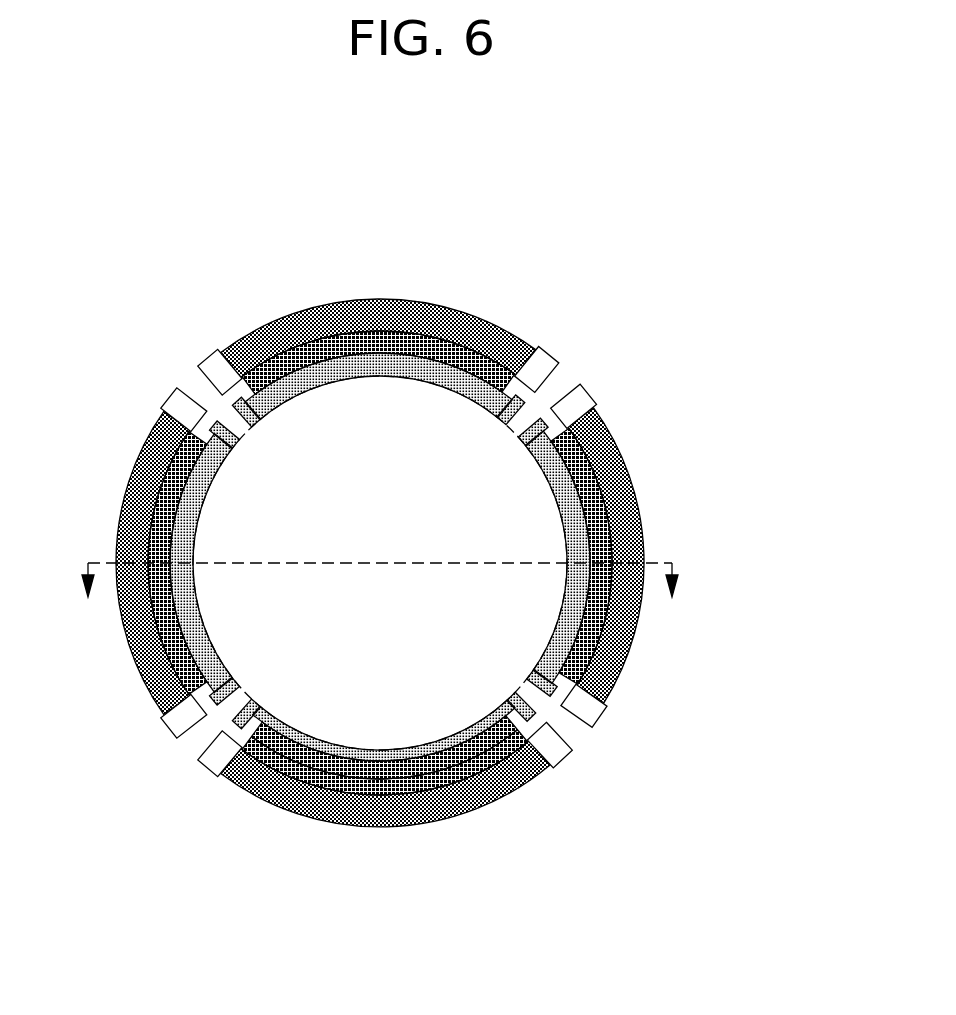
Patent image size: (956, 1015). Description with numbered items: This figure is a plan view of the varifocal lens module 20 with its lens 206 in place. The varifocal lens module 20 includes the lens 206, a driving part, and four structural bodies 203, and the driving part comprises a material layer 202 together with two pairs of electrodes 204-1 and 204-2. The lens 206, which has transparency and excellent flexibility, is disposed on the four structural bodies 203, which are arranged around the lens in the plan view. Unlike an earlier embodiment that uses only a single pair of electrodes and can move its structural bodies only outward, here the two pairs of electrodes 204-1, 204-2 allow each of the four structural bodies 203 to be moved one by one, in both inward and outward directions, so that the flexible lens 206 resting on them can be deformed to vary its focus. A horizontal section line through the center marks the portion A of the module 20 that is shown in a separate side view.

The varifocal lens module 20 is at (386, 217).
The material layer 202 is at (552, 325).
The structural body 203 is at (487, 801).
The electrode 204-1 is at (630, 486).
The electrode 204-2 is at (592, 615).
The lens 206 is at (555, 372).